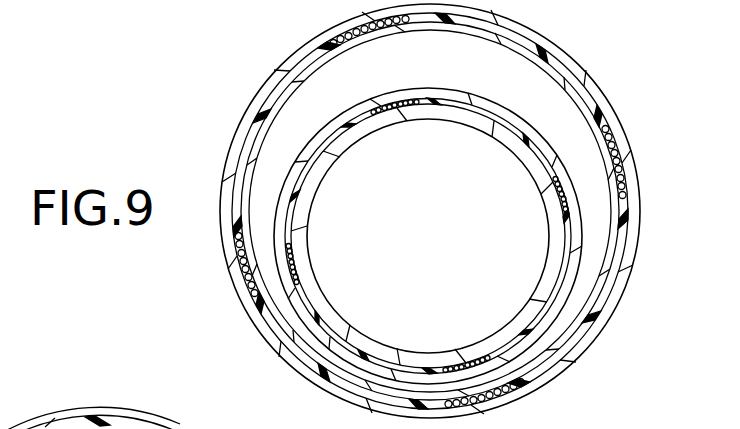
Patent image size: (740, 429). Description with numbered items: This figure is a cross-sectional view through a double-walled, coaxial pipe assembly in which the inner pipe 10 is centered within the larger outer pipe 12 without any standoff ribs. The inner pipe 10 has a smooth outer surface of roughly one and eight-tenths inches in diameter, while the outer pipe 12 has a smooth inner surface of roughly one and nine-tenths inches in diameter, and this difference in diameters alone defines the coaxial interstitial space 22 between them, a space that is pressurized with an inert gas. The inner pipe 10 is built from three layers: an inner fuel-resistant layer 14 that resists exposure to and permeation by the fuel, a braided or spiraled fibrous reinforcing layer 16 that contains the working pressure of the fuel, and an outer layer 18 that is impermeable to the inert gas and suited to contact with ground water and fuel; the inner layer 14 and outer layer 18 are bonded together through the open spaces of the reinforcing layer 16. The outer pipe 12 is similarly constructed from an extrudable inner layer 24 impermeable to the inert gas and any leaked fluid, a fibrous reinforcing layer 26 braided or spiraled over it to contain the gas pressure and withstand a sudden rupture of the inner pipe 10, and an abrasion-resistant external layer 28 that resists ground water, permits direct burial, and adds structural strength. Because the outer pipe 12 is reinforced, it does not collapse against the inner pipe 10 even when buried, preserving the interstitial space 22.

The inner pipe 10 is at (540, 142).
The outer pipe 12 is at (583, 78).
The inner fuel-resistant layer 14 is at (337, 325).
The reinforcing layer 16 is at (300, 232).
The outer layer 18 is at (317, 160).
The interstitial space 22 is at (575, 313).
The inner layer 24 is at (613, 233).
The reinforcing layer 26 is at (620, 163).
The external layer 28 is at (627, 137).